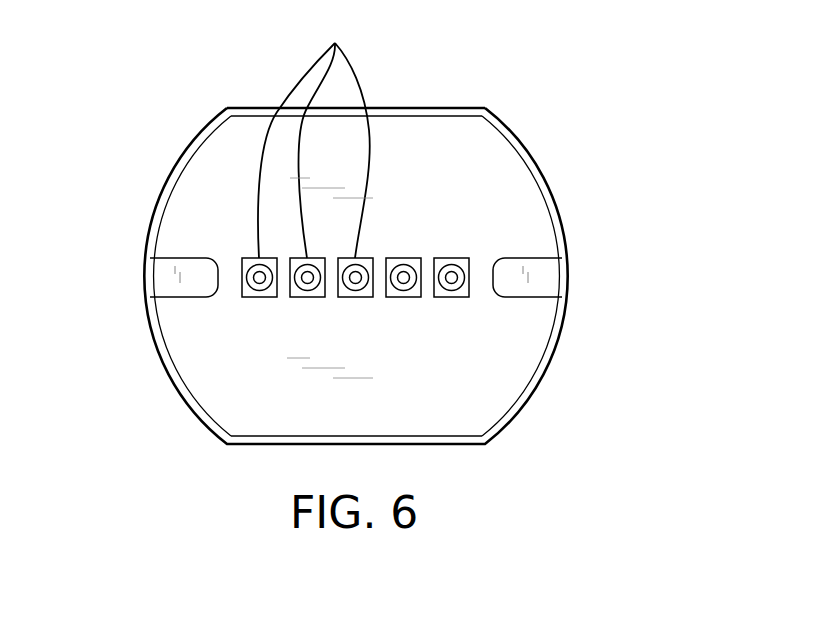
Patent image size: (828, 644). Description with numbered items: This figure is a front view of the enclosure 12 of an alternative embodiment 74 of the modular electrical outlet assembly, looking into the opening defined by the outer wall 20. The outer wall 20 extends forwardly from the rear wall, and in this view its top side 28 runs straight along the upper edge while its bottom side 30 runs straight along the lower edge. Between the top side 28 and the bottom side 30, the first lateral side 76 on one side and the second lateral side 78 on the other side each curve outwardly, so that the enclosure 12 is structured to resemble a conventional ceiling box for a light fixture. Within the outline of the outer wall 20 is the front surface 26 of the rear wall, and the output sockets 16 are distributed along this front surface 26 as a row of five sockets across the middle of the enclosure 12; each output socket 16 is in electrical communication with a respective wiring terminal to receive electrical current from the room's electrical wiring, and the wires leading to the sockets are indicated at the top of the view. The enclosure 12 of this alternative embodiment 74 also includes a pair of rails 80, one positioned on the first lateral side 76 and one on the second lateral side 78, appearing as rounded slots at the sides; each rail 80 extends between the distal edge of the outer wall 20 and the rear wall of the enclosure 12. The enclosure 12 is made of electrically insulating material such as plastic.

The enclosure 12 is at (205, 128).
The output sockets 16 is at (355, 151).
The outer wall 20 is at (440, 108).
The front surface 26 is at (467, 366).
The top side 28 is at (247, 108).
The bottom side 30 is at (251, 445).
The alternative embodiment 74 is at (572, 123).
The first lateral side 76 is at (147, 252).
The second lateral side 78 is at (563, 230).
The rails 80 is at (177, 298).